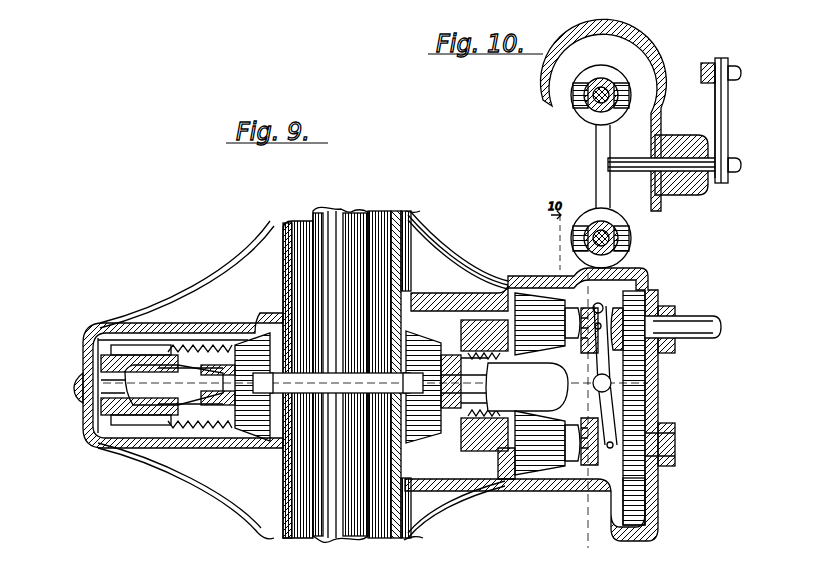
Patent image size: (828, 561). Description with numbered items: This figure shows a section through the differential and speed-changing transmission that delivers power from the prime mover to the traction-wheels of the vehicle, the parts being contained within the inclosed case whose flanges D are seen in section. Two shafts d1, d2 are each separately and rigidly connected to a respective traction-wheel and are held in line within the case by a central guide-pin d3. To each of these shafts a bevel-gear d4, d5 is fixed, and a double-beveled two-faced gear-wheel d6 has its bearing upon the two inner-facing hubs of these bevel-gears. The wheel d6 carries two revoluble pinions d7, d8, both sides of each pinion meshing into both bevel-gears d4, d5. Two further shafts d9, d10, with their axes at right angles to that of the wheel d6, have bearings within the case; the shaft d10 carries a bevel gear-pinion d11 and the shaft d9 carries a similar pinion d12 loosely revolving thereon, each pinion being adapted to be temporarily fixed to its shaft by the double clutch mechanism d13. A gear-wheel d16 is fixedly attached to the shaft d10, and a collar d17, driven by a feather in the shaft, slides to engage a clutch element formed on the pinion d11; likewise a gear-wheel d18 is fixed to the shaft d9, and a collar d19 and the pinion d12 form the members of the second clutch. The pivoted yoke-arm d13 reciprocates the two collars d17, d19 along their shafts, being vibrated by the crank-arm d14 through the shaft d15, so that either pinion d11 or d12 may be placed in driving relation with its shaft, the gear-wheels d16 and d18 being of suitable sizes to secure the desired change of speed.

In FIG. 9, the flange D is at (227, 258).
In FIG. 9, the shaft d1 is at (356, 512).
In FIG. 9, the shaft d2 is at (352, 362).
In FIG. 9, the central guide-pin d3 is at (337, 385).
In FIG. 9, the bevel-gear d4 is at (257, 455).
In FIG. 9, the bevel-gear d5 is at (250, 310).
In FIG. 9, the double-beveled two-faced gear-wheel d6 is at (113, 422).
In FIG. 9, the revoluble pinion d7 is at (233, 425).
In FIG. 9, the revoluble pinion d8 is at (435, 430).
In FIG. 9, the shaft d9 is at (668, 433).
In FIG. 9, the shaft d10 is at (715, 322).
In FIG. 9, the bevel gear-pinion d11 is at (520, 303).
In FIG. 9, the pinion d12 is at (540, 458).
In FIG. 9, the double clutch mechanism d13 is at (606, 393).
In FIG. 10, the double clutch mechanism d13 is at (590, 155).
In FIG. 10, the crank-arm d14 is at (720, 120).
In FIG. 10, the shaft d15 is at (625, 150).
In FIG. 9, the gear-wheel d16 is at (633, 310).
In FIG. 9, the collar d17 is at (595, 303).
In FIG. 10, the collar d17 is at (603, 75).
In FIG. 9, the gear-wheel d18 is at (640, 503).
In FIG. 9, the collar d19 is at (584, 460).
In FIG. 10, the collar d19 is at (622, 230).